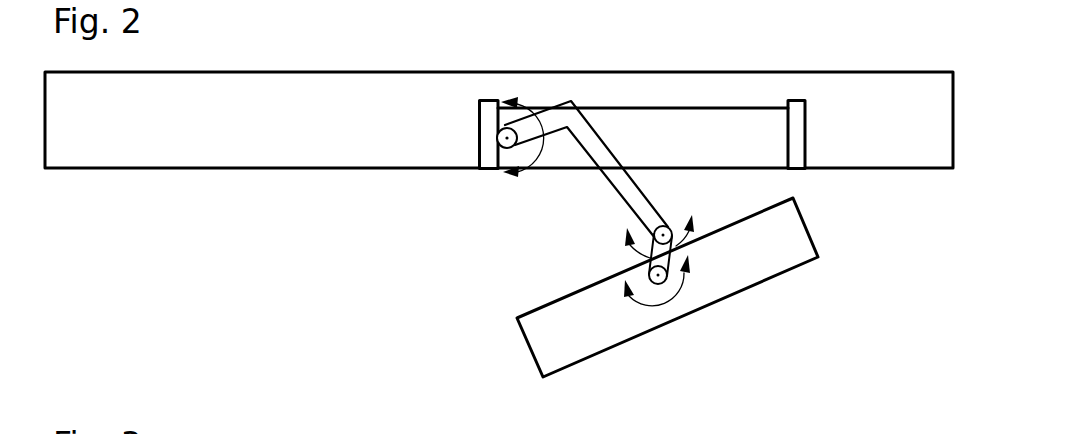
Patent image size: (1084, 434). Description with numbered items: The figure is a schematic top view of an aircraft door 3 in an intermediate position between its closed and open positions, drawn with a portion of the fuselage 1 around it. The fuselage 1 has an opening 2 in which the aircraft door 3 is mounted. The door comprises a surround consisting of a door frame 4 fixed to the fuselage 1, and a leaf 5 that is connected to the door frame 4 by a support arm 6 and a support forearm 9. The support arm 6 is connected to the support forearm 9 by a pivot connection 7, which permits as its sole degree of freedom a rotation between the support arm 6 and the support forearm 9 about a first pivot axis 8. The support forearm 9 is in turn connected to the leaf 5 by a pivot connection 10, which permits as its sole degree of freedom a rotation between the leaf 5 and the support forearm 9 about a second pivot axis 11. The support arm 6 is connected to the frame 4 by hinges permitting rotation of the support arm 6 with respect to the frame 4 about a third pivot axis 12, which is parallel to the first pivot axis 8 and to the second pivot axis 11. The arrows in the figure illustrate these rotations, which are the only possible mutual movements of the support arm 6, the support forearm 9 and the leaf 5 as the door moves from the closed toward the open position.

The fuselage 1 is at (282, 93).
The opening 2 is at (756, 145).
The aircraft door 3 is at (775, 310).
The door frame 4 is at (487, 141).
The leaf 5 is at (532, 332).
The support arm 6 is at (623, 187).
The pivot connection 7 is at (677, 245).
The first pivot axis 8 is at (668, 227).
The support forearm 9 is at (670, 278).
The pivot connection 10 is at (656, 298).
The second pivot axis 11 is at (648, 270).
The third pivot axis 12 is at (507, 150).